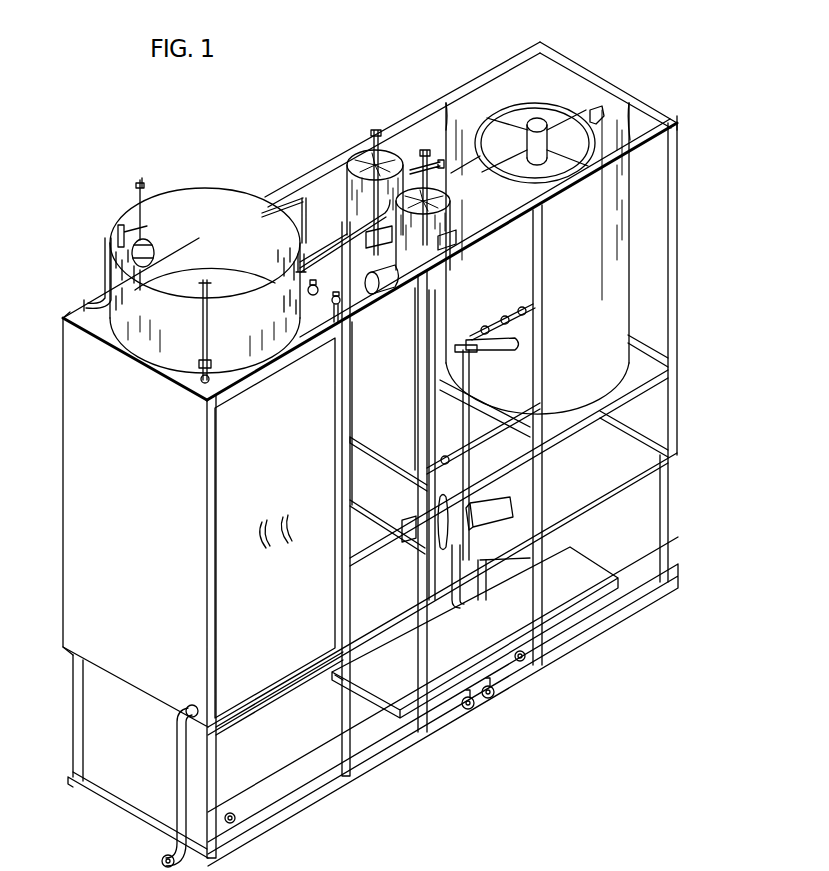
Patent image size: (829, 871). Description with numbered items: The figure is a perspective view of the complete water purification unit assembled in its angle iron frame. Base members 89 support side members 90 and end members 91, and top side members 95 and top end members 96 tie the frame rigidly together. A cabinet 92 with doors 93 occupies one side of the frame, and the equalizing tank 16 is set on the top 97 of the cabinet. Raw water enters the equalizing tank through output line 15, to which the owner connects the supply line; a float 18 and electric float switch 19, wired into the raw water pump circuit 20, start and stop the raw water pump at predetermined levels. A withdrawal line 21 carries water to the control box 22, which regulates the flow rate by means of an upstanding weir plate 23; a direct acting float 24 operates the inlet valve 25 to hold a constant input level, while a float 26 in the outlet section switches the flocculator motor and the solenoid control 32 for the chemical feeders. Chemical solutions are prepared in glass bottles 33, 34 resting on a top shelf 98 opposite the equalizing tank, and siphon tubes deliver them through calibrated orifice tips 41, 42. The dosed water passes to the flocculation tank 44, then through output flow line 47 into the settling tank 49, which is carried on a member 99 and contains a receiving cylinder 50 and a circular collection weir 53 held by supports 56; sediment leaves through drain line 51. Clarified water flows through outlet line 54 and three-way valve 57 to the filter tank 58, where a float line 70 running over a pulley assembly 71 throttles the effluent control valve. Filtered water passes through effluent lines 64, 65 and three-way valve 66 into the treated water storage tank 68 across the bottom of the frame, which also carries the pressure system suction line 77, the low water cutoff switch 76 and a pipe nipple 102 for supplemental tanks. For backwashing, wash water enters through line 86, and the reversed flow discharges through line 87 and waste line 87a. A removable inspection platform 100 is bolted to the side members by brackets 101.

The output line 15 is at (224, 336).
The equalizing tank 16 is at (192, 202).
The float 18 is at (164, 254).
The electric float switch 19 is at (126, 240).
The raw water pump circuit 20 is at (114, 270).
The withdrawal line 21 is at (305, 254).
The control box 22 is at (368, 354).
The weir plate 23 is at (373, 285).
The direct acting float 24 is at (400, 300).
The inlet valve 25 is at (344, 330).
The float 26 is at (342, 311).
The solenoid control 32 is at (423, 229).
The glass bottle 33 is at (363, 184).
The glass bottle 34 is at (460, 222).
The calibrated orifice tip 41 is at (376, 266).
The calibrated orifice tip 42 is at (363, 240).
The flocculation tank 44 is at (315, 206).
The output flow line 47 is at (486, 442).
The settling tank 49 is at (632, 241).
The receiving cylinder 50 is at (540, 120).
The drain line 51 is at (524, 514).
The circular collection weir 53 is at (515, 124).
The outlet line 54 is at (508, 306).
The supports 56 is at (601, 122).
The three-way valve 57 is at (486, 344).
The filter tank 58 is at (414, 148).
The filter effluent line 64 is at (368, 528).
The filter effluent line 65 is at (489, 513).
The three-way valve 66 is at (428, 582).
The treated water storage tank 68 is at (154, 752).
The line 70 is at (460, 178).
The pulley assembly 71 is at (416, 158).
The electric switch 76 is at (399, 523).
The pressure system suction line 77 is at (532, 670).
The wash water line 86 is at (478, 718).
The wash discharge line 87 is at (476, 374).
The waste line 87a is at (502, 698).
The base members 89 is at (130, 812).
The side members 90 is at (538, 564).
The end members 91 is at (676, 486).
The cabinet 92 is at (156, 491).
The doors 93 is at (278, 482).
The top side members 95 is at (558, 206).
The top end members 96 is at (648, 116).
The cabinet top 97 is at (198, 384).
The top shelf 98 is at (512, 208).
The support member 99 is at (648, 390).
The inspection platform 100 is at (514, 619).
The brackets 101 is at (375, 730).
The pipe nipple 102 is at (242, 820).